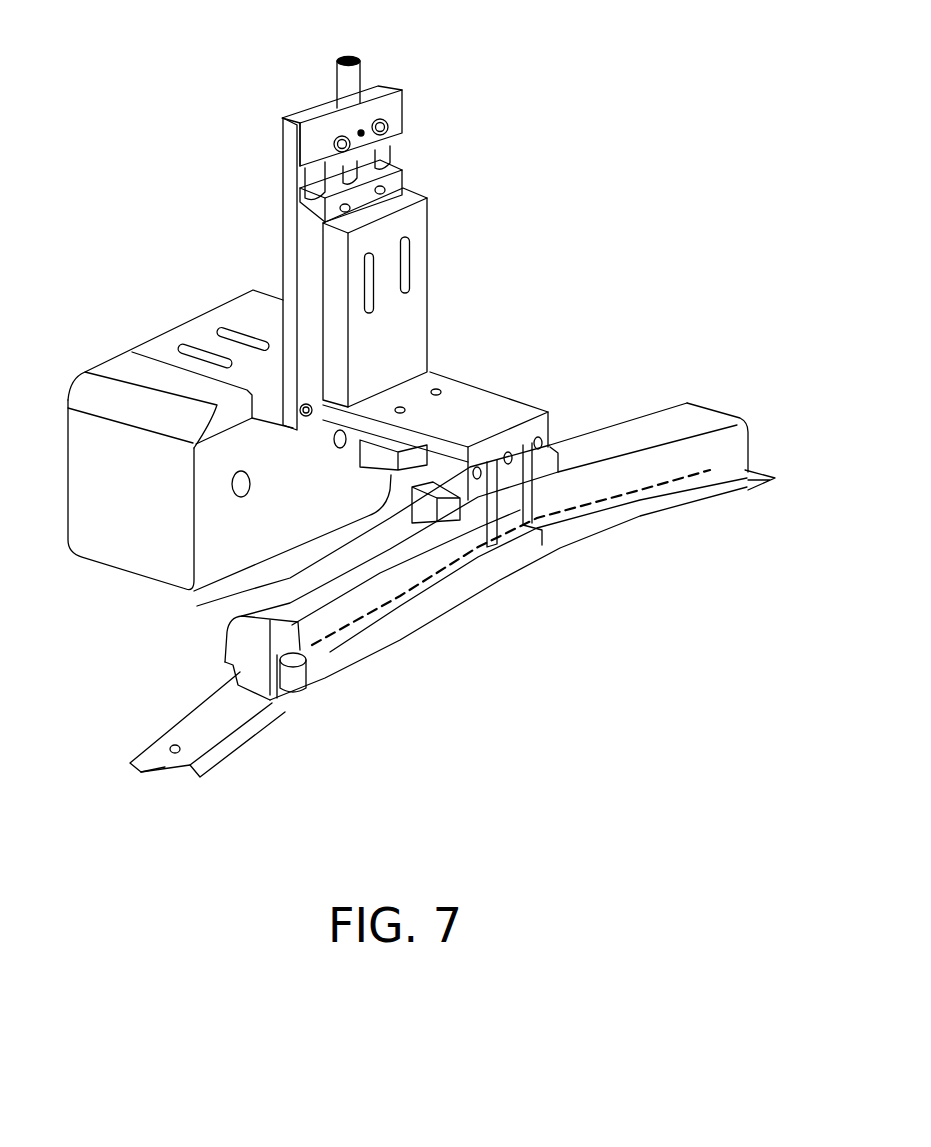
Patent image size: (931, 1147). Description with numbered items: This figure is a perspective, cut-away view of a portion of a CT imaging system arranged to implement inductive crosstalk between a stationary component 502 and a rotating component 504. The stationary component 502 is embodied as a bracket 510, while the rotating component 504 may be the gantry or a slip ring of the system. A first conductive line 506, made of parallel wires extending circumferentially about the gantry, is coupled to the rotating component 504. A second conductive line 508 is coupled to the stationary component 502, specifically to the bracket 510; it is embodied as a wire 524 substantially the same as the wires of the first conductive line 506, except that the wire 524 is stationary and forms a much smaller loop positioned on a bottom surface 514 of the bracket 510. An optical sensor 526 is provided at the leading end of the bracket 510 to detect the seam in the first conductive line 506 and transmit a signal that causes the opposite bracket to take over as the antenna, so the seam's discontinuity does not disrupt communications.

The stationary component 502 is at (387, 90).
The rotating component 504 is at (148, 748).
The first conductive line 506 is at (183, 748).
The second conductive line 508 is at (743, 487).
The bracket 510 is at (280, 160).
The bottom surface 514 is at (258, 702).
The wire 524 is at (487, 592).
The optical sensor 526 is at (322, 675).